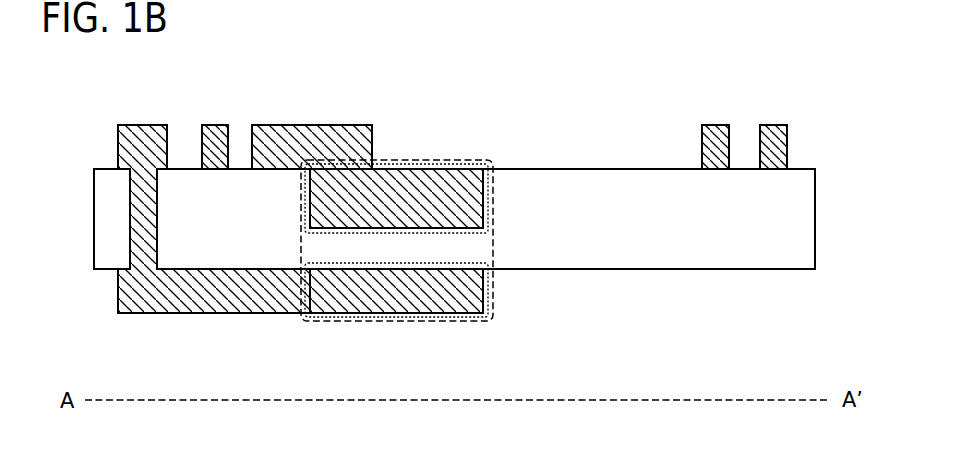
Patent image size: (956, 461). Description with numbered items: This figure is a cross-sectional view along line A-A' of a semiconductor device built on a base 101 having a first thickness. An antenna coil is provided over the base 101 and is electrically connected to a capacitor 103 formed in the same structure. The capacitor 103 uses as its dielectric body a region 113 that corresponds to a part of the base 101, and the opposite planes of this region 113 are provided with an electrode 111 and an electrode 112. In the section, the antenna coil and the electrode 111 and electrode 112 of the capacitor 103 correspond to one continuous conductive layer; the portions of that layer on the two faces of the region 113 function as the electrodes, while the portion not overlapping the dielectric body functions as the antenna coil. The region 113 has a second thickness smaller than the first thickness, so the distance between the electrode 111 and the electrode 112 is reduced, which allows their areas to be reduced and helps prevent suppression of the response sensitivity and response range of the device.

The base 101 is at (600, 260).
The capacitor 103 is at (452, 323).
The electrode 111 is at (423, 163).
The electrode 112 is at (390, 322).
The region 113 is at (337, 273).